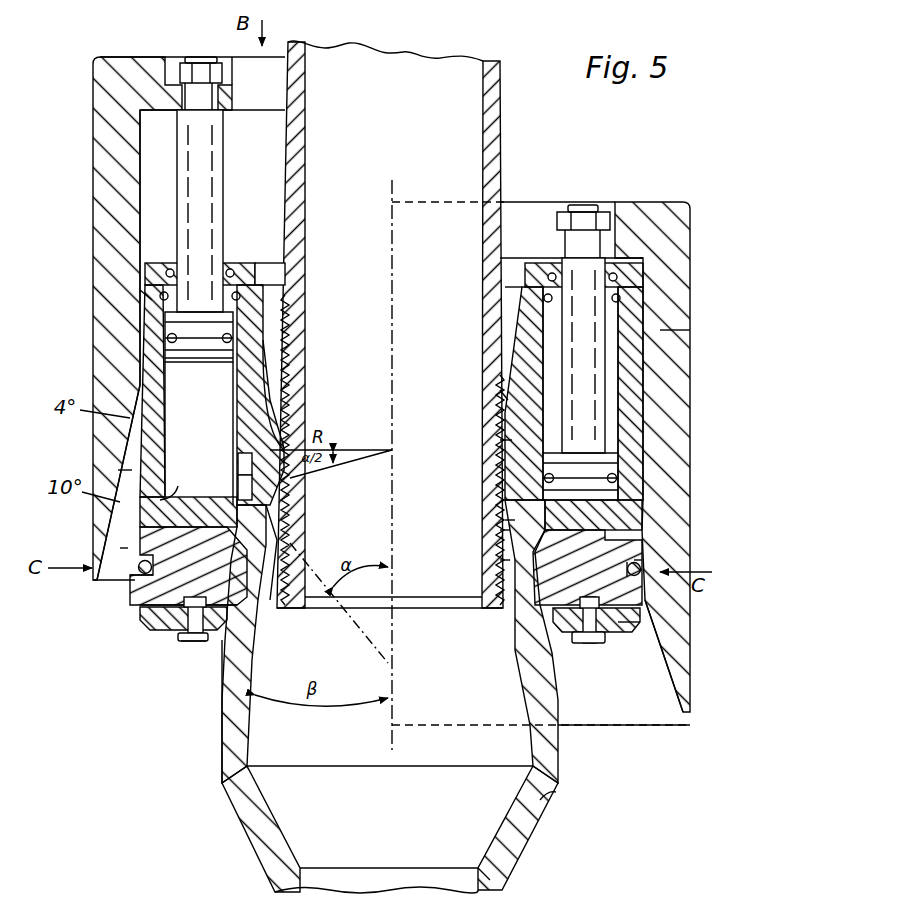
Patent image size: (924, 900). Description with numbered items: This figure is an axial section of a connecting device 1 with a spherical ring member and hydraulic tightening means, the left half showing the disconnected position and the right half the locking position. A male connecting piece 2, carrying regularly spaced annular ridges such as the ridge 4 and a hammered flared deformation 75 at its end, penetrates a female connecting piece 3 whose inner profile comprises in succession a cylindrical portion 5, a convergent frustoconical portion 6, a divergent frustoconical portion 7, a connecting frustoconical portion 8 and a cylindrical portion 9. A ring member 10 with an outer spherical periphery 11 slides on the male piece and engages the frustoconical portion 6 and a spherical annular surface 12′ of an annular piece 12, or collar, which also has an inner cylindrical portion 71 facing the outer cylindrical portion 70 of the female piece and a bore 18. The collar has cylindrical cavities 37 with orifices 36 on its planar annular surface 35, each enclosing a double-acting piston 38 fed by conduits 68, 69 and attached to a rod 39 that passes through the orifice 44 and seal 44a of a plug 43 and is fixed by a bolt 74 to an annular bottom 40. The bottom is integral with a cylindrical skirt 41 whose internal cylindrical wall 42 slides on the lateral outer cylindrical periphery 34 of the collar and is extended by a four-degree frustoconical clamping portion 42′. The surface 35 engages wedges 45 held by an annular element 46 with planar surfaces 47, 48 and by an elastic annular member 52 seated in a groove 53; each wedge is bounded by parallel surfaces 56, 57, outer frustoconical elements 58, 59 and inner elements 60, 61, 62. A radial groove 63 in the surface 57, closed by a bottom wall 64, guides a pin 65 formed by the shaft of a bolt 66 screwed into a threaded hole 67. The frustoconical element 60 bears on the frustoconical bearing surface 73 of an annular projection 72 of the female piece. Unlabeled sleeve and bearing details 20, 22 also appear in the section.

The connecting device 1 is at (215, 760).
The male connecting piece 2 is at (502, 146).
The female connecting piece 3 is at (540, 828).
The annular ridge 4 is at (272, 605).
The cylindrical portion 5 is at (238, 462).
The convergent frustoconical portion 6 is at (238, 490).
The divergent frustoconical portion 7 is at (530, 688).
The connecting frustoconical portion 8 is at (548, 798).
The cylindrical portion 9 is at (490, 878).
The ring member 10 is at (506, 405).
The outer spherical periphery 11 is at (272, 368).
The annular piece 12 is at (510, 360).
The spherical annular surface 12′ is at (308, 395).
The bore 18 is at (270, 260).
The sleeve 20 is at (512, 300).
The ball bearing 22 is at (612, 482).
The lateral outer cylindrical periphery 34 is at (652, 335).
The planar annular surface 35 is at (150, 258).
The orifice 36 is at (158, 262).
The cylindrical cavity 37 is at (200, 378).
The piston 38 is at (165, 350).
The rod 39 is at (185, 158).
The annular bottom 40 is at (155, 80).
The cylindrical skirt 41 is at (102, 272).
The internal cylindrical wall 42 is at (148, 132).
The frustoconical annular portion 42′ is at (91, 482).
The plug 43 is at (650, 262).
The orifice 44 is at (612, 272).
The seal 44a is at (640, 285).
The wedge 45 is at (142, 606).
The annular element 46 is at (660, 655).
The planar surface 47 is at (600, 648).
The planar surface 48 is at (173, 613).
The elastic annular member 52 is at (645, 580).
The groove 53 is at (118, 548).
The parallel surface 56 is at (650, 555).
The parallel surface 57 is at (630, 620).
The frustoconical element 58 is at (140, 548).
The frustoconical element 59 is at (130, 598).
The frustoconical element 60 is at (600, 530).
The cylindrical element 61 is at (640, 612).
The frustoconical element 62 is at (530, 590).
The groove 63 is at (218, 603).
The bottom wall 64 is at (170, 607).
The pin 65 is at (175, 647).
The bolt 66 is at (185, 640).
The threaded hole 67 is at (193, 638).
The conduit 68 is at (148, 308).
The conduit 69 is at (176, 495).
The cylindrical portion 70 is at (497, 482).
The cylindrical portion 71 is at (505, 438).
The annular projection 72 is at (508, 536).
The frustoconical bearing surface 73 is at (506, 558).
The bolt 74 is at (204, 58).
The deformation 75 is at (285, 612).